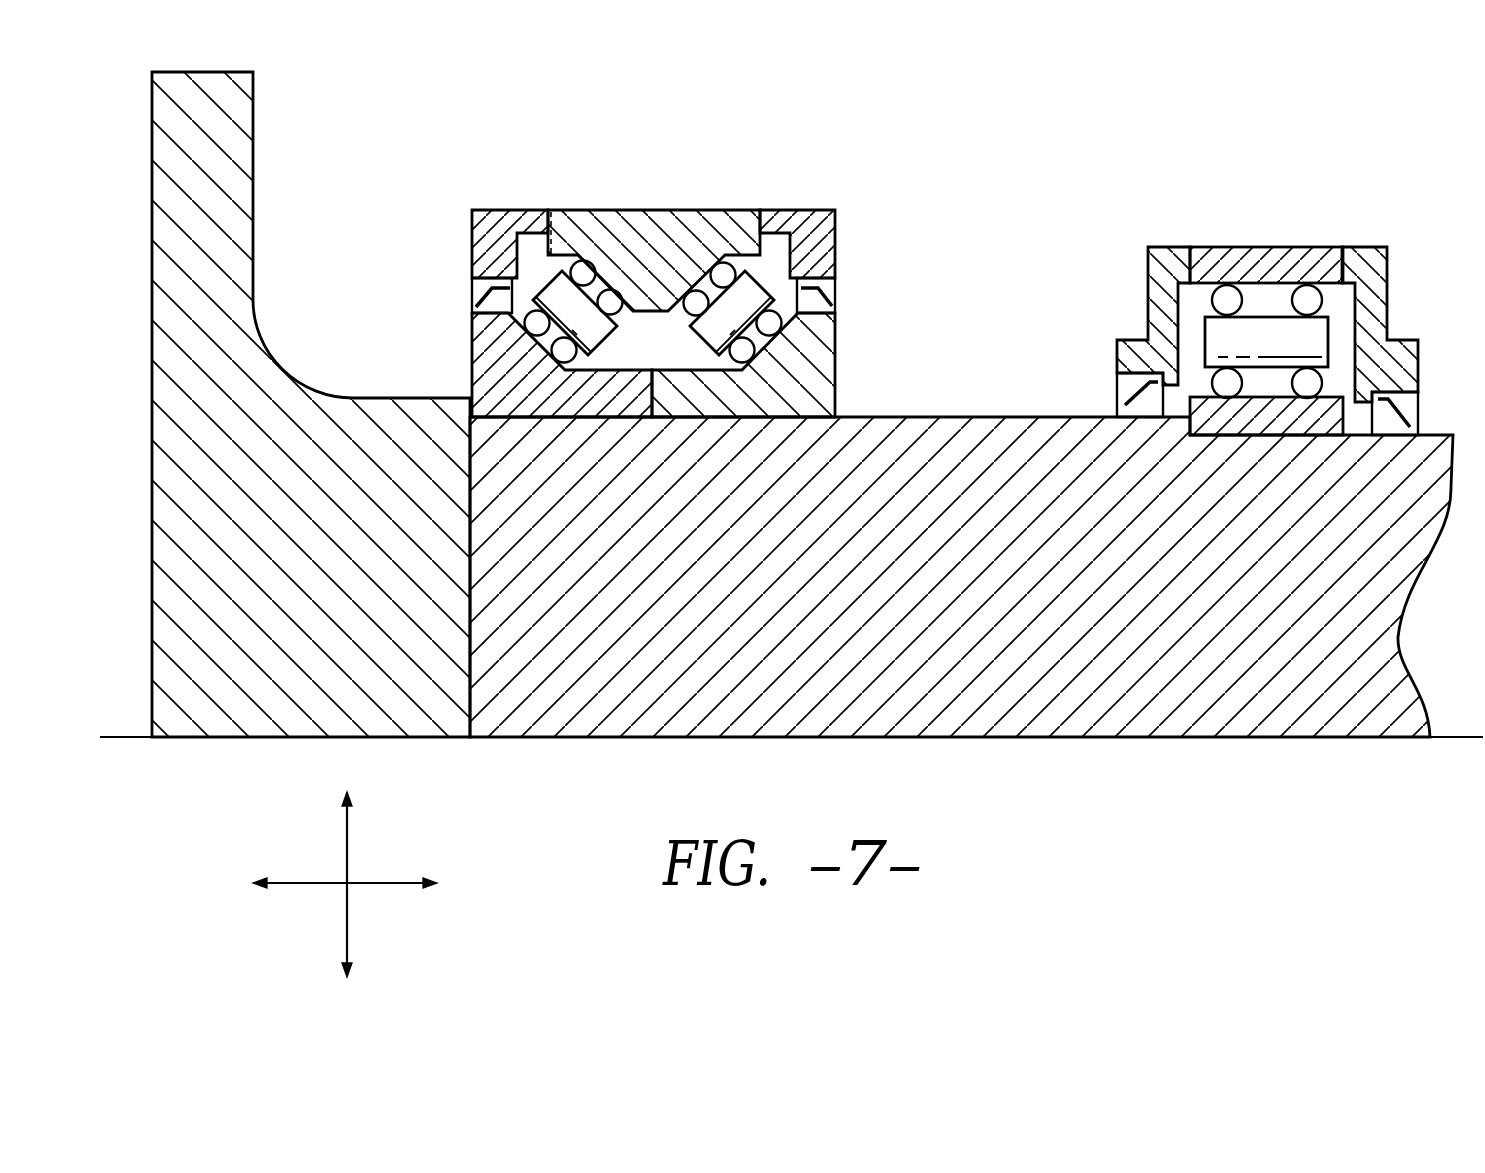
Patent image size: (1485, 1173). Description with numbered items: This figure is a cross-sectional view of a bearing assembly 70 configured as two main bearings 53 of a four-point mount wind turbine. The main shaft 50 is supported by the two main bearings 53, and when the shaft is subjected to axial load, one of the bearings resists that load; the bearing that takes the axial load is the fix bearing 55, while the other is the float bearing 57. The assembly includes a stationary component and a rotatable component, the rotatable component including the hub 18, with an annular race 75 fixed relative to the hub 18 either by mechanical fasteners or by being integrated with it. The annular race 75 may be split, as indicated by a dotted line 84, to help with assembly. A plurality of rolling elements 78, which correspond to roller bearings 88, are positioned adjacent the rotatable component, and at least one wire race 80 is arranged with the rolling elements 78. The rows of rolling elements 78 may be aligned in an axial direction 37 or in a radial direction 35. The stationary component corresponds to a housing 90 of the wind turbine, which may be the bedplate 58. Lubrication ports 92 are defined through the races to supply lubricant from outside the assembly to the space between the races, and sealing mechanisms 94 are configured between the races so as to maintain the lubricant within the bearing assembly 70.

The hub 18 is at (258, 148).
The radial direction 35 is at (377, 885).
The axial direction 37 is at (349, 848).
The main shaft 50 is at (959, 597).
The main bearing 53 is at (840, 213).
The fix bearing 55 is at (838, 342).
The float bearing 57 is at (1393, 312).
The bedplate 58 is at (762, 213).
The bearing assembly 70 is at (1046, 178).
The annular race 75 is at (530, 422).
The rolling elements 78 is at (733, 310).
The wire race 80 is at (747, 356).
The dotted line 84 is at (646, 406).
The roller bearings 88 is at (568, 305).
The housing 90 is at (722, 207).
The lubrication ports 92 is at (536, 268).
The sealing mechanisms 94 is at (552, 210).